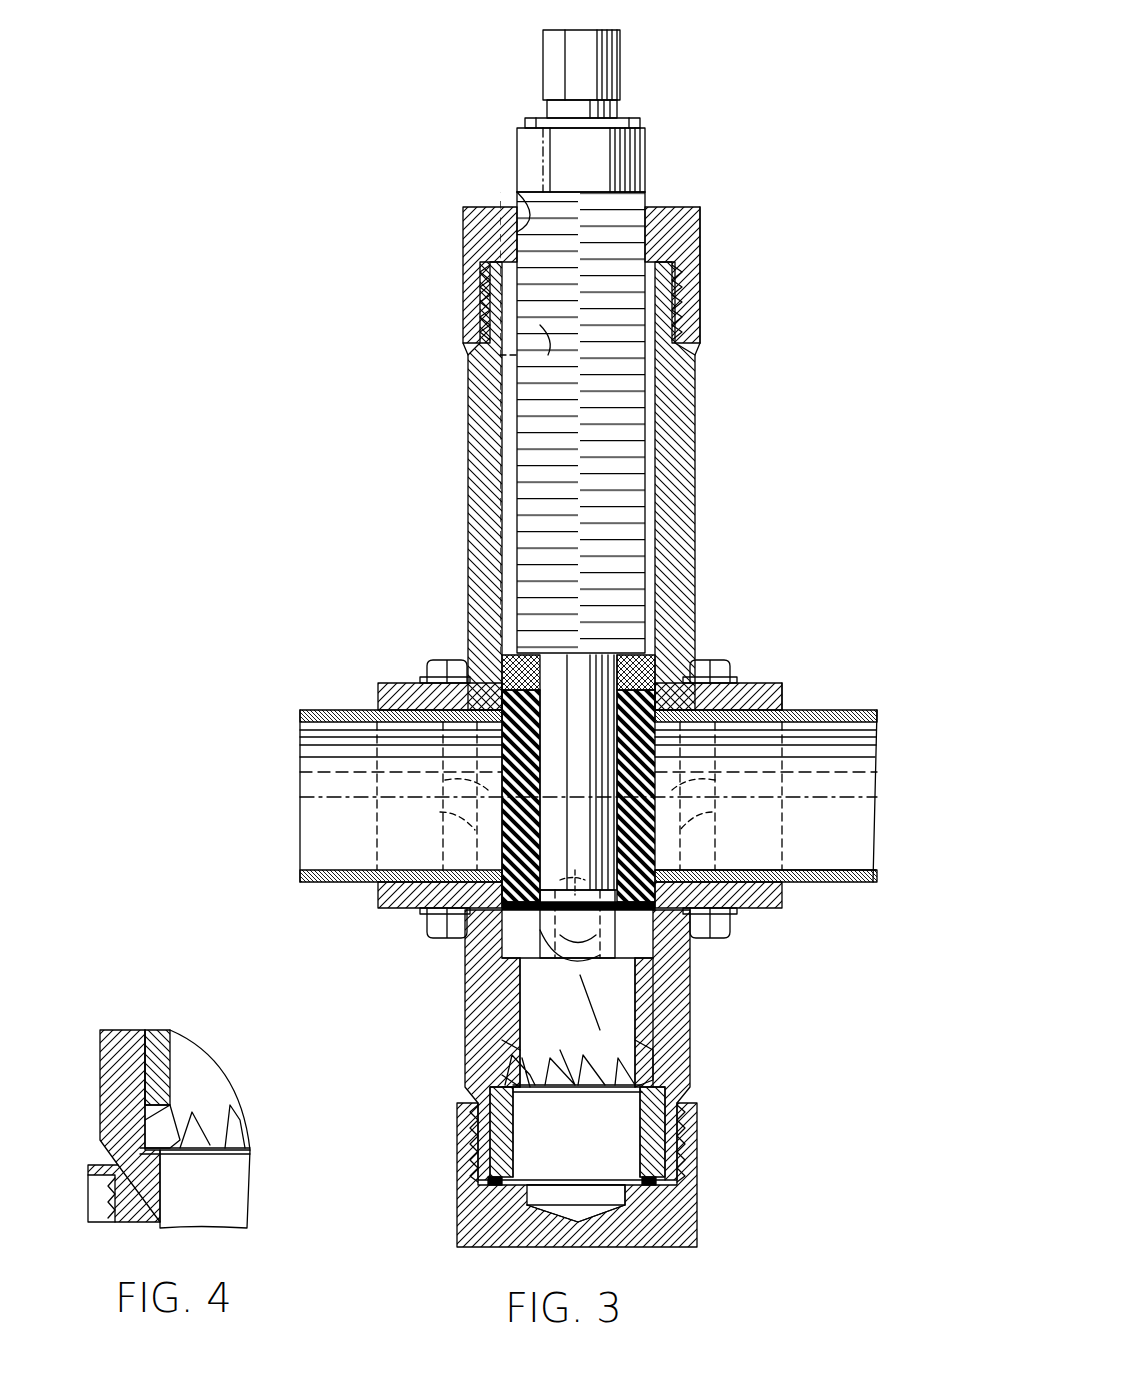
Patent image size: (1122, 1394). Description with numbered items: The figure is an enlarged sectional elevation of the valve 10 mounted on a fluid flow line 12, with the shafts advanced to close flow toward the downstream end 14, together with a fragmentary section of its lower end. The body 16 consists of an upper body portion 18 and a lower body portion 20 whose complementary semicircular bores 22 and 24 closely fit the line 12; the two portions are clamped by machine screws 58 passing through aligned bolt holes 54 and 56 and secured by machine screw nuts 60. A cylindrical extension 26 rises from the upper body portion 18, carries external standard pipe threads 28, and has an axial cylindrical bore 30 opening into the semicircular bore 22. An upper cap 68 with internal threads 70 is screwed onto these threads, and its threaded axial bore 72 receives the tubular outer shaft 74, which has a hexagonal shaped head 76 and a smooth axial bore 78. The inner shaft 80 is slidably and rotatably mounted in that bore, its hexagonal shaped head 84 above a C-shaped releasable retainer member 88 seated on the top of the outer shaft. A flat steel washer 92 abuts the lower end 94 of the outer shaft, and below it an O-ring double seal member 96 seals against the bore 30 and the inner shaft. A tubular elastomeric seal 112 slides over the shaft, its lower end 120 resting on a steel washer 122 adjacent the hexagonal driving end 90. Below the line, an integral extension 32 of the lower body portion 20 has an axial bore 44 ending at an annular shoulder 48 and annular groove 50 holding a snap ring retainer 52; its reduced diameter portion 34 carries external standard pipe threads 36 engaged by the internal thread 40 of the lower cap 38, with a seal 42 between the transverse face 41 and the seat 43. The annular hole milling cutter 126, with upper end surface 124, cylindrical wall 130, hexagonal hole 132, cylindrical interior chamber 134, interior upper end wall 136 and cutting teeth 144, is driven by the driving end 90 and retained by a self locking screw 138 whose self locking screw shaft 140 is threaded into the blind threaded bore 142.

In FIG. 3, the valve 10 is at (450, 480).
In FIG. 3, the fluid flow line 12 is at (840, 712).
In FIG. 3, the downstream end 14 is at (345, 712).
In FIG. 3, the body 16 is at (790, 682).
In FIG. 3, the upper body portion 18 is at (782, 697).
In FIG. 3, the lower body portion 20 is at (805, 882).
In FIG. 3, the semicircular bore 22 is at (360, 722).
In FIG. 3, the semicircular bore 24 is at (378, 885).
In FIG. 3, the cylindrical extension 26 is at (470, 520).
In FIG. 3, the external standard pipe threads 28 is at (690, 298).
In FIG. 3, the axial cylindrical bore 30 is at (517, 400).
In FIG. 3, the integral extension 32 is at (690, 1040).
In FIG. 4, the integral extension 32 is at (115, 1071).
In FIG. 3, the reduced diameter portion 34 is at (680, 1115).
In FIG. 4, the reduced diameter portion 34 is at (160, 1197).
In FIG. 3, the external standard pipe threads 36 is at (688, 1148).
In FIG. 4, the external standard pipe threads 36 is at (110, 1190).
In FIG. 3, the lower cap 38 is at (705, 1193).
In FIG. 4, the lower cap 38 is at (90, 1222).
In FIG. 3, the internal thread 40 is at (480, 1142).
In FIG. 4, the internal thread 40 is at (135, 1222).
In FIG. 3, the transverse face 41 is at (655, 1210).
In FIG. 3, the seal 42 is at (490, 1182).
In FIG. 3, the seat 43 is at (545, 1205).
In FIG. 3, the axial bore 44 is at (660, 1015).
In FIG. 3, the annular shoulder 48 is at (665, 1070).
In FIG. 4, the annular shoulder 48 is at (150, 1135).
In FIG. 3, the annular groove 50 is at (548, 1088).
In FIG. 4, the annular groove 50 is at (228, 1156).
In FIG. 3, the snap ring retainer 52 is at (592, 1088).
In FIG. 4, the snap ring retainer 52 is at (248, 1150).
In FIG. 3, the bolt holes 54 is at (440, 792).
In FIG. 3, the bolt holes 56 is at (440, 815).
In FIG. 3, the machine screw 58 is at (445, 677).
In FIG. 3, the machine screw nut 60 is at (427, 668).
In FIG. 3, the upper cap 68 is at (455, 238).
In FIG. 3, the internal threads 70 is at (485, 312).
In FIG. 3, the threaded axial bore 72 is at (525, 195).
In FIG. 3, the outer shaft 74 is at (655, 195).
In FIG. 3, the hexagonal shaped head 76 is at (530, 148).
In FIG. 3, the axial bore 78 is at (500, 355).
In FIG. 3, the inner shaft 80 is at (625, 45).
In FIG. 3, the hexagonal shaped head 84 is at (608, 86).
In FIG. 3, the C-shaped releasable retainer member 88 is at (625, 118).
In FIG. 3, the driving end 90 is at (540, 950).
In FIG. 3, the flat steel washer 92 is at (645, 655).
In FIG. 3, the lower end 94 is at (580, 660).
In FIG. 3, the O-ring double seal member 96 is at (515, 655).
In FIG. 3, the tubular elastomeric seal 112 is at (660, 838).
In FIG. 3, the lower end 120 is at (690, 957).
In FIG. 3, the steel washer 122 is at (680, 900).
In FIG. 3, the upper end surface 124 is at (502, 865).
In FIG. 3, the annular hole milling cutter 126 is at (505, 1023).
In FIG. 4, the annular hole milling cutter 126 is at (208, 1040).
In FIG. 3, the cylindrical wall 130 is at (505, 990).
In FIG. 4, the cylindrical wall 130 is at (140, 1065).
In FIG. 3, the axially disposed hole 132 is at (580, 925).
In FIG. 3, the cylindrical interior chamber 134 is at (520, 1058).
In FIG. 4, the cylindrical interior chamber 134 is at (175, 1050).
In FIG. 3, the interior upper end wall 136 is at (660, 992).
In FIG. 3, the self locking screw 138 is at (608, 1013).
In FIG. 3, the self locking screw shaft 140 is at (578, 968).
In FIG. 3, the blind threaded bore 142 is at (575, 870).
In FIG. 3, the cutting teeth 144 is at (548, 1068).
In FIG. 4, the cutting teeth 144 is at (236, 1118).